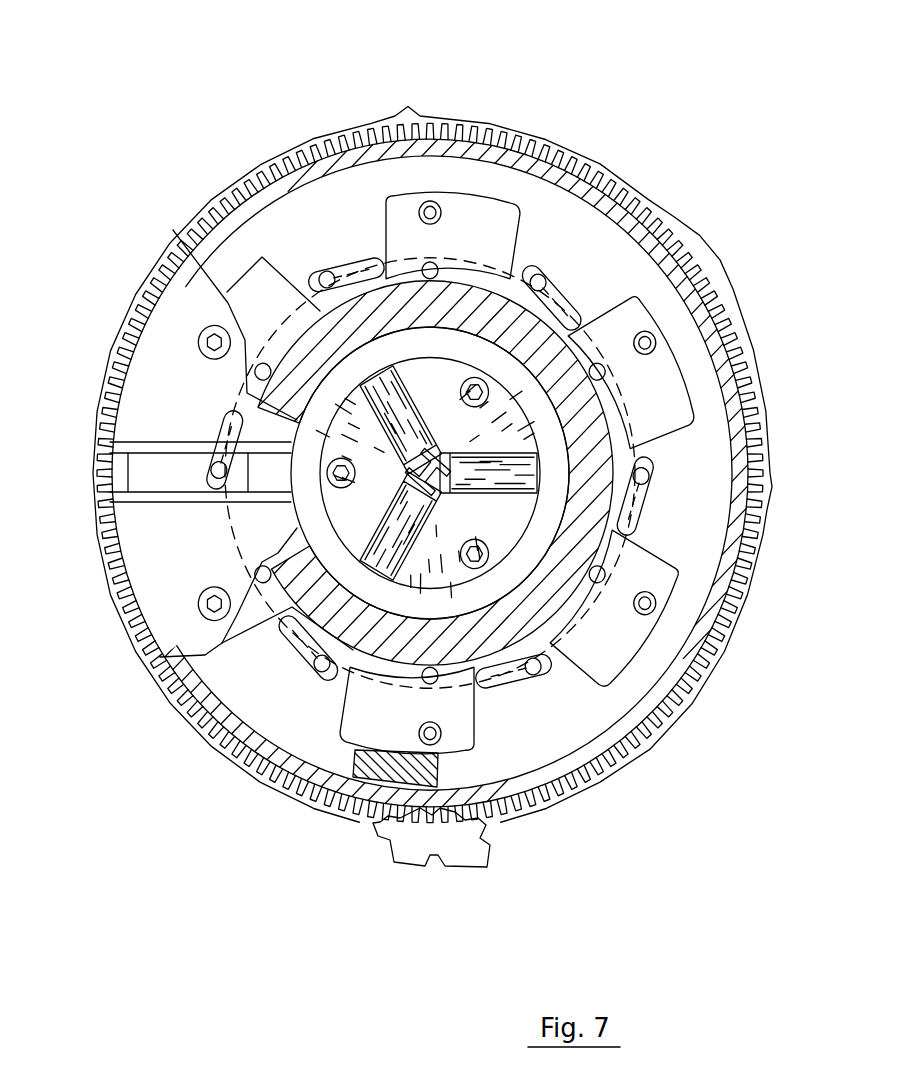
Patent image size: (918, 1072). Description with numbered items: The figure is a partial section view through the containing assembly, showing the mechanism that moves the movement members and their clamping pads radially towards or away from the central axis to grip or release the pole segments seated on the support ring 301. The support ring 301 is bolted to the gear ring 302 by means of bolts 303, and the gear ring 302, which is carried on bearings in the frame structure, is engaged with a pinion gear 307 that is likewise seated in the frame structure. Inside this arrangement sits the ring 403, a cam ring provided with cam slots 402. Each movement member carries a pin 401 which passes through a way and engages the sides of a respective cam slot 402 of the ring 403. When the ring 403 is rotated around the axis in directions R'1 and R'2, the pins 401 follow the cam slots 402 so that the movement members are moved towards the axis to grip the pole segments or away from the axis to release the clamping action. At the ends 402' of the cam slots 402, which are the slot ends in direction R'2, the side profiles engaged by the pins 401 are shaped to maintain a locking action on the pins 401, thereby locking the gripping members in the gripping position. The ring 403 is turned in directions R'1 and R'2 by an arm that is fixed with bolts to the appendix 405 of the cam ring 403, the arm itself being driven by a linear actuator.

The support ring 301 is at (167, 330).
The gear ring 302 is at (247, 182).
The bolts 303 is at (210, 350).
The pinion gear 307 is at (418, 868).
The pin 401 is at (207, 472).
The cam slots 402 is at (465, 484).
The ends of cam slots 402' is at (429, 460).
The ring 403 is at (528, 185).
The appendix 405 is at (356, 778).
The rotation direction R'1 is at (359, 54).
The rotation direction R'2 is at (493, 55).